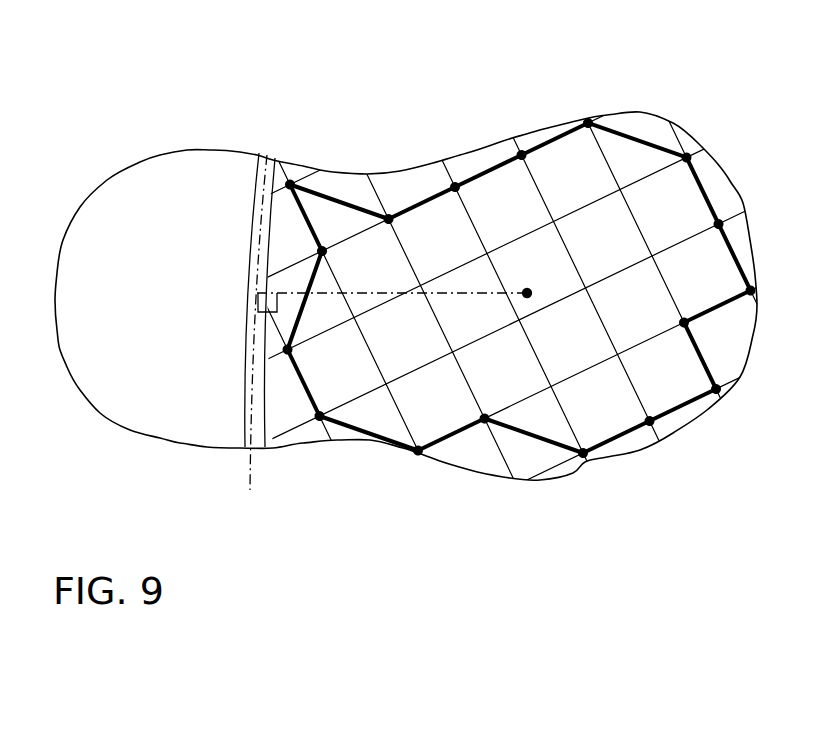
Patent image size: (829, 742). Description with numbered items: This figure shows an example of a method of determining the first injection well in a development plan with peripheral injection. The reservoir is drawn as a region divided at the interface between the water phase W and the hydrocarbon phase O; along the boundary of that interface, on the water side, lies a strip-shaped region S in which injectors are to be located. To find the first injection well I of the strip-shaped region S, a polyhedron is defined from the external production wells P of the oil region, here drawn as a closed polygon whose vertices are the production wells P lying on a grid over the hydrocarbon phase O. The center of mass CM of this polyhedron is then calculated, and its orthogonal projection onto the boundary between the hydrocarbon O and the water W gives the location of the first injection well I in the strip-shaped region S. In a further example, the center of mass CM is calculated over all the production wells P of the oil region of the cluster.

The strip-shaped region S is at (253, 242).
The injection well I is at (241, 322).
The water phase W is at (110, 360).
The hydrocarbon phase O is at (725, 190).
The center of mass CM is at (402, 286).
The production wells P is at (503, 287).